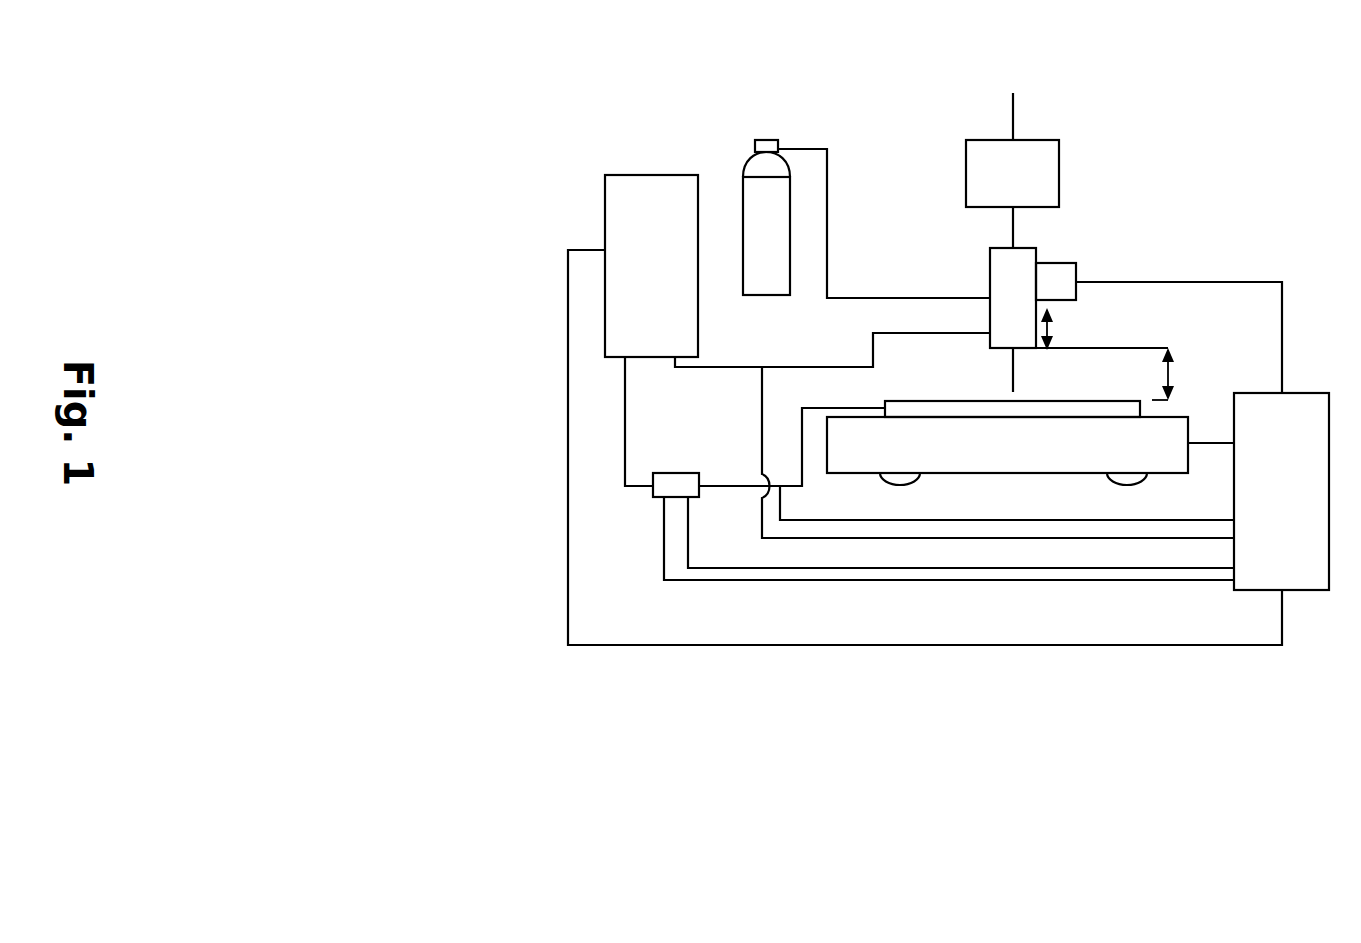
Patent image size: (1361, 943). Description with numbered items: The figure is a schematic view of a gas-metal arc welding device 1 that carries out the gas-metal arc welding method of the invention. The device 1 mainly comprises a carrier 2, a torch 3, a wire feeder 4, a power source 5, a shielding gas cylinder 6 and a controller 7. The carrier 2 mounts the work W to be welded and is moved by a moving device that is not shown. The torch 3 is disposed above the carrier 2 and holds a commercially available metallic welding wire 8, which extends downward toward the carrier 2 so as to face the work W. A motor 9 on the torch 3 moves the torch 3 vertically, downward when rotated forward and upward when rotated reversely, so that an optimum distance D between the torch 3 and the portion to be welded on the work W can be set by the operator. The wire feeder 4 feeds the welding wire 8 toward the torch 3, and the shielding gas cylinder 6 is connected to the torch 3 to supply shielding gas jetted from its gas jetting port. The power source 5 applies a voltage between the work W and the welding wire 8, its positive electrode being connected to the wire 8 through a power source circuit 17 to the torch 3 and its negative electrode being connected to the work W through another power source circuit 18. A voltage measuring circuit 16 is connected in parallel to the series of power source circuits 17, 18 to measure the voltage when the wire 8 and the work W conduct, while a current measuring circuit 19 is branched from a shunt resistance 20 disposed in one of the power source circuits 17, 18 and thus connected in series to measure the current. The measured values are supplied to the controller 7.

The gas-metal arc welding device 1 is at (1237, 218).
The carrier 2 is at (1024, 463).
The torch 3 is at (990, 270).
The wire feeder 4 is at (1059, 172).
The power source 5 is at (656, 175).
The shielding gas cylinder 6 is at (766, 297).
The controller 7 is at (1310, 393).
The welding wire 8 is at (1014, 370).
The motor 9 is at (1078, 263).
The voltage measuring circuit 16 is at (1013, 540).
The power source circuit 17 is at (815, 367).
The power source circuit 18 is at (802, 486).
The current measuring circuit 19 is at (898, 582).
The shunt resistance 20 is at (675, 473).
The work W is at (929, 410).
The optimum distance D is at (1180, 377).